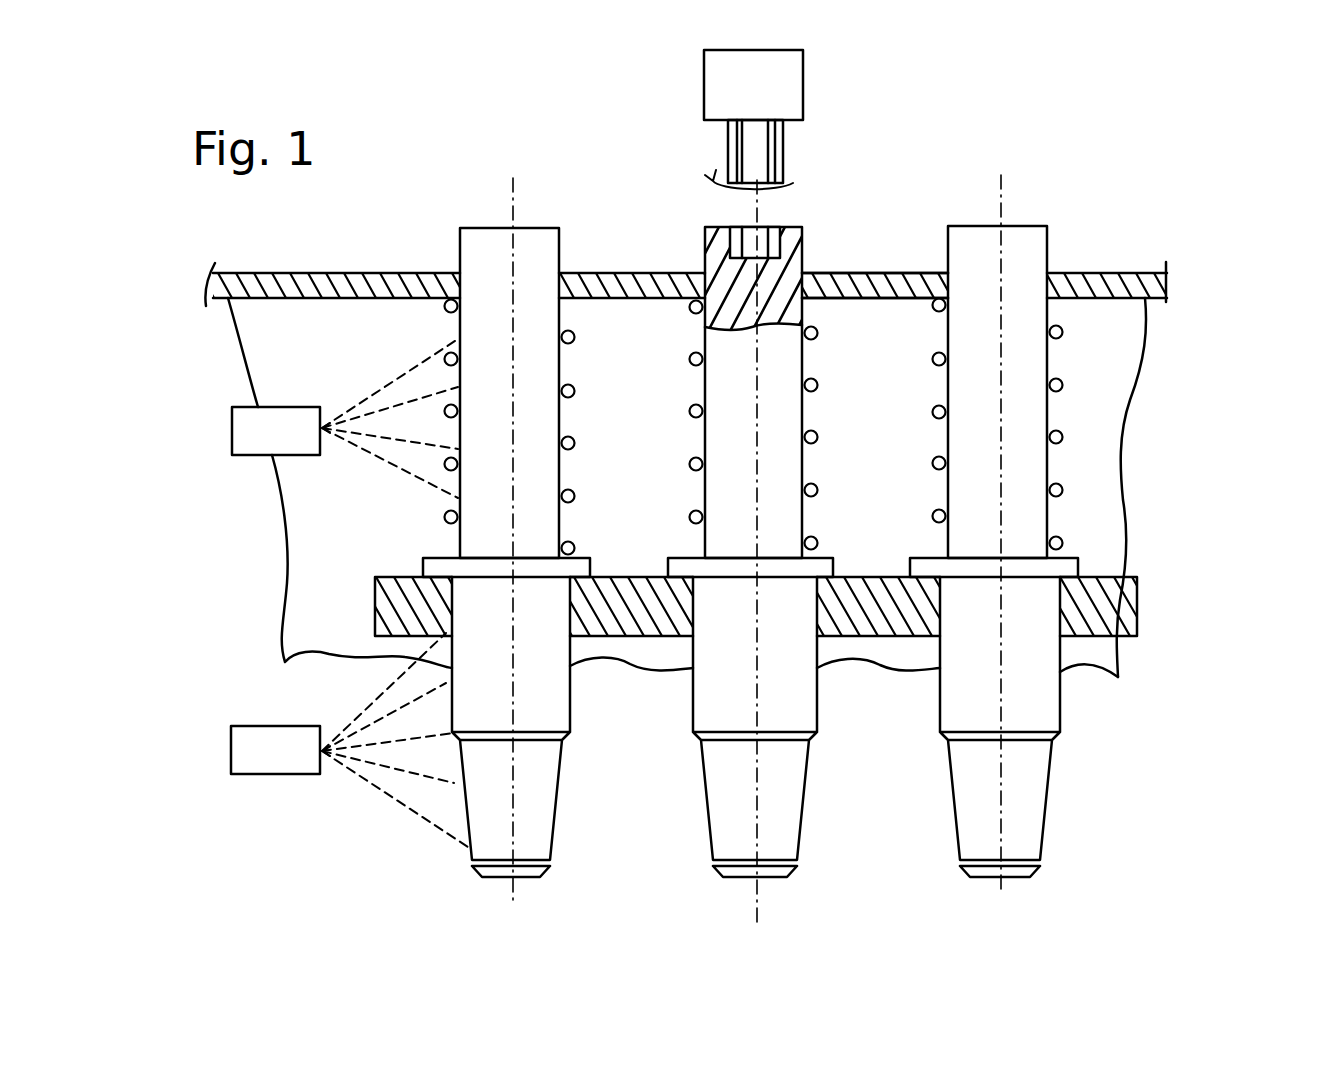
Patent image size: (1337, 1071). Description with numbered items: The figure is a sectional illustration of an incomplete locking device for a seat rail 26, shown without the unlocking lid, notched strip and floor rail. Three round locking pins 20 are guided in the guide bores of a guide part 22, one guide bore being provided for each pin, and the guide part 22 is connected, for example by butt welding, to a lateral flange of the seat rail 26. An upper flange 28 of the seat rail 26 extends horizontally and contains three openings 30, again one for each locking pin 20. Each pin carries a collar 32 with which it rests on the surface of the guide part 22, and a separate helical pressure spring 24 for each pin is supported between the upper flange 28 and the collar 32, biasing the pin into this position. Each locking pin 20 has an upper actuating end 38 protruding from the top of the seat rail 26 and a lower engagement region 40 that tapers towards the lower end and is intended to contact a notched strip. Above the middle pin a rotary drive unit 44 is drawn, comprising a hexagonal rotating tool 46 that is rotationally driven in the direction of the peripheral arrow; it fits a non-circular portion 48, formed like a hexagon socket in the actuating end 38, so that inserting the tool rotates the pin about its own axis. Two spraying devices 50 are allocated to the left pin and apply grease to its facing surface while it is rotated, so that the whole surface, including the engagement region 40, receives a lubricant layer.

The locking pin 20 is at (482, 257).
The guide part 22 is at (1108, 610).
The spring 24 is at (1063, 437).
The seat rail 26 is at (1105, 378).
The upper flange 28 is at (1165, 283).
The opening 30 is at (945, 270).
The collar 32 is at (1060, 562).
The upper actuating end 38 is at (557, 210).
The lower engagement region 40 is at (568, 800).
The drive unit 44 is at (784, 80).
The rotating tool 46 is at (774, 157).
The non-circular portion 48 is at (748, 242).
The spraying device 50 is at (259, 742).